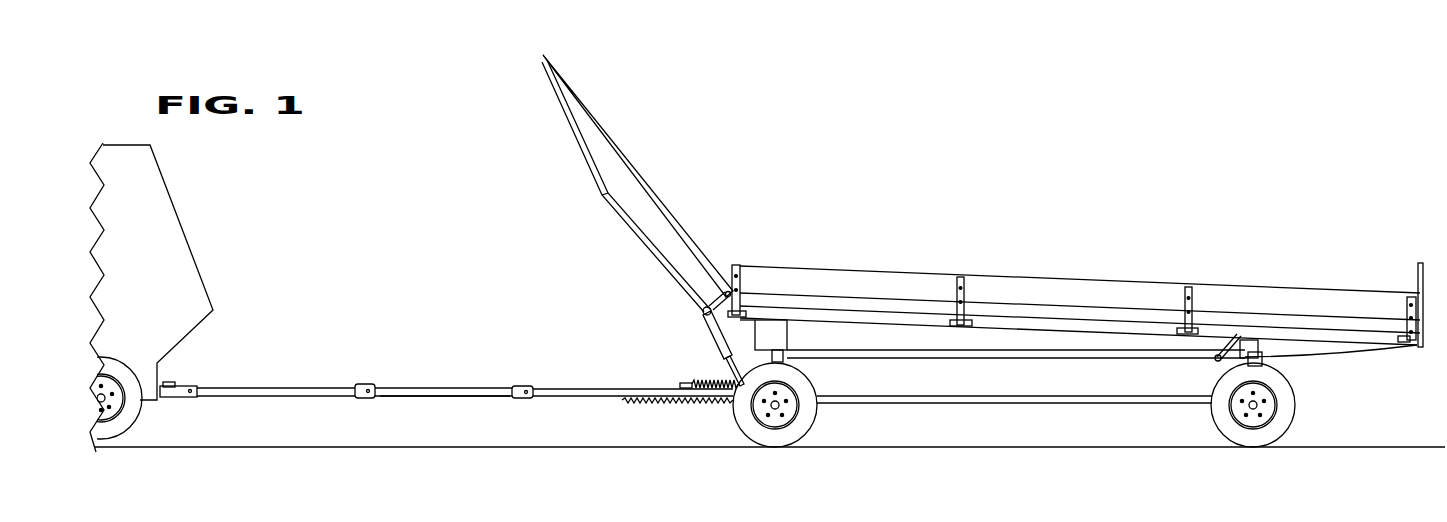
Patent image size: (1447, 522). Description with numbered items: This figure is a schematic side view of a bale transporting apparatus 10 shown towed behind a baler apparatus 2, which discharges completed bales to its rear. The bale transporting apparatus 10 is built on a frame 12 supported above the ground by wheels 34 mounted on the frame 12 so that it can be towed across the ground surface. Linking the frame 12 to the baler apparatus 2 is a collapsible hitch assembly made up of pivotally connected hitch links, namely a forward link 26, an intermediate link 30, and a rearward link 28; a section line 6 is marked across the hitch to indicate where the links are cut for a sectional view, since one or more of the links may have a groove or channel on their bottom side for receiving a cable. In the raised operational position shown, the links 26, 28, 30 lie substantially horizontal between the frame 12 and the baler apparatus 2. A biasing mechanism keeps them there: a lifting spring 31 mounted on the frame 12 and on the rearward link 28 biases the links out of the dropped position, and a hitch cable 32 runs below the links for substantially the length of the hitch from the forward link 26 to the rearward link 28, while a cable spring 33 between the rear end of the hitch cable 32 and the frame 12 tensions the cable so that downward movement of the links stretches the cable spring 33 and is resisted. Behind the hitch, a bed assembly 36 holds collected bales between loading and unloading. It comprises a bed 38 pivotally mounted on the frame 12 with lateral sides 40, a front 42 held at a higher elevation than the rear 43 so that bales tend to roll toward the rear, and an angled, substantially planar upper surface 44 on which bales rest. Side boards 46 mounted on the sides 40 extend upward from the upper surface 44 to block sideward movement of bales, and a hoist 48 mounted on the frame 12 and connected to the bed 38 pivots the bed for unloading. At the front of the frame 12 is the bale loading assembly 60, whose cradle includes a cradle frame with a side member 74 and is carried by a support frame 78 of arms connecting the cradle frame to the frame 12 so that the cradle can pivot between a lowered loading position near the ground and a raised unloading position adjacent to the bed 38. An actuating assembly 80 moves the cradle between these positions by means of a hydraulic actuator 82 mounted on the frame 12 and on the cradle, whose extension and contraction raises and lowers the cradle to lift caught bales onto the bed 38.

The baler apparatus 2 is at (150, 223).
The section line 6- 6 is at (322, 427).
The bale transporting apparatus 10 is at (862, 97).
The frame 12 is at (990, 400).
The forward link 26 is at (220, 387).
The rearward link 28 is at (538, 392).
The intermediate link 30 is at (443, 392).
The lifting spring 31 is at (735, 385).
The hitch cable 32 is at (463, 398).
The cable spring 33 is at (693, 402).
The wheels 34 is at (803, 422).
The bed assembly 36 is at (1100, 240).
The bed 38 is at (1098, 327).
The lateral sides 40 is at (880, 320).
The front 42 is at (750, 315).
The rear 43 is at (1393, 340).
The upper surface 44 is at (982, 318).
The side boards 46 is at (1242, 302).
The hoist 48 is at (777, 337).
The bale loading assembly 60 is at (683, 168).
The side member 74 is at (597, 117).
The support frame 78 is at (652, 250).
The actuating assembly 80 is at (697, 308).
The hydraulic actuator 82 is at (712, 340).